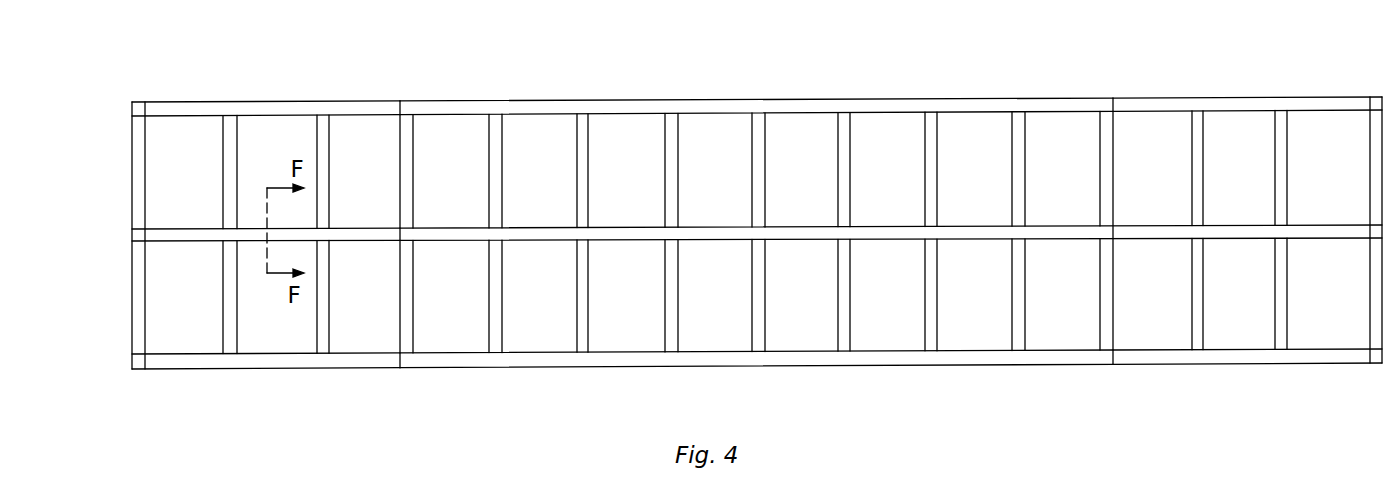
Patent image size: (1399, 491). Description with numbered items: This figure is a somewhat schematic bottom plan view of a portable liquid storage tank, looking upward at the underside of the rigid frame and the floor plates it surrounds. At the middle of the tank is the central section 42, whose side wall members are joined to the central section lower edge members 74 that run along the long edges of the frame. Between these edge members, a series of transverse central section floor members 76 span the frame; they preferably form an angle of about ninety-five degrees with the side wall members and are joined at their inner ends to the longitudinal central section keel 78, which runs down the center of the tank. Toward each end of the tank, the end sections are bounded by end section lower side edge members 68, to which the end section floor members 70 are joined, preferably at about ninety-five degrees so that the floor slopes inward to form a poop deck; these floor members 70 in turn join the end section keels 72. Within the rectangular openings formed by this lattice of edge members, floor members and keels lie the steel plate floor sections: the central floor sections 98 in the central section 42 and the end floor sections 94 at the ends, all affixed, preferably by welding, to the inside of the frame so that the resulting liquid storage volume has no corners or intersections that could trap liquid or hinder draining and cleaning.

The central section 42 is at (125, 332).
The end section lower side edge member 68 is at (165, 102).
The end section floor member 70 is at (137, 163).
The end section keel 72 is at (163, 235).
The central section lower edge member 74 is at (545, 98).
The central section floor member 76 is at (405, 137).
The central section keel 78 is at (633, 232).
The end floor section 94 is at (1143, 142).
The central floor section 98 is at (633, 137).